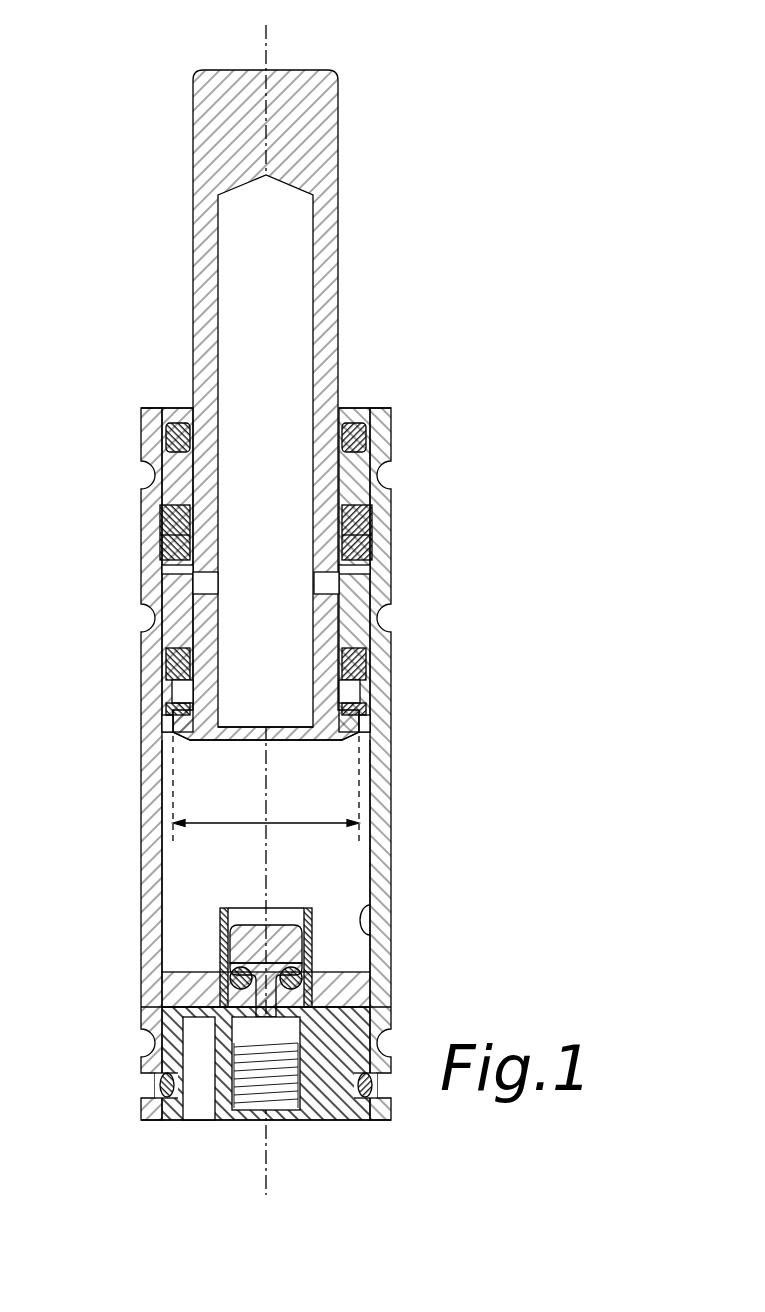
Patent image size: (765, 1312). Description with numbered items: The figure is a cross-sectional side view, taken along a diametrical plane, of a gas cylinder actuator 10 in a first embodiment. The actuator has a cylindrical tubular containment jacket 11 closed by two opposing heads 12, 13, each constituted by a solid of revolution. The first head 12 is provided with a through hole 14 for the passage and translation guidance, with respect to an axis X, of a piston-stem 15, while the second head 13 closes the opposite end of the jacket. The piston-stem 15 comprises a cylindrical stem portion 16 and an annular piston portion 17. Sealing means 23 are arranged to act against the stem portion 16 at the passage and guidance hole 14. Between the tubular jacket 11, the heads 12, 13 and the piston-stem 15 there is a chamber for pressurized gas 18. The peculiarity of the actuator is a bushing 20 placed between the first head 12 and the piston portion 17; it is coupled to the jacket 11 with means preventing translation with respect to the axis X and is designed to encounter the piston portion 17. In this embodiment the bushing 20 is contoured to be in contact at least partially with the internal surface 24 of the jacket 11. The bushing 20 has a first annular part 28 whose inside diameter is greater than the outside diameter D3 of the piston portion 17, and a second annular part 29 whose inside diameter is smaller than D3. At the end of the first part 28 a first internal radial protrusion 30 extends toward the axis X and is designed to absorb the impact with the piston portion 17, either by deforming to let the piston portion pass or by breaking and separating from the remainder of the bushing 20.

The gas cylinder actuator 10 is at (476, 152).
The tubular containment jacket 11 is at (377, 788).
The first head 12 is at (402, 410).
The second head 13 is at (330, 1122).
The through hole 14 is at (167, 466).
The piston-stem 15 is at (342, 300).
The stem portion 16 is at (201, 264).
The piston portion 17 is at (199, 745).
The chamber for pressurized gas 18 is at (283, 858).
The bushing 20 is at (372, 656).
The sealing means 23 is at (373, 547).
The internal surface 24 is at (365, 912).
The first annular part 28 is at (367, 677).
The second annular part 29 is at (163, 581).
The first internal radial protrusion 30 is at (169, 703).
The outside diameter D3 is at (222, 824).
The axis X is at (267, 58).